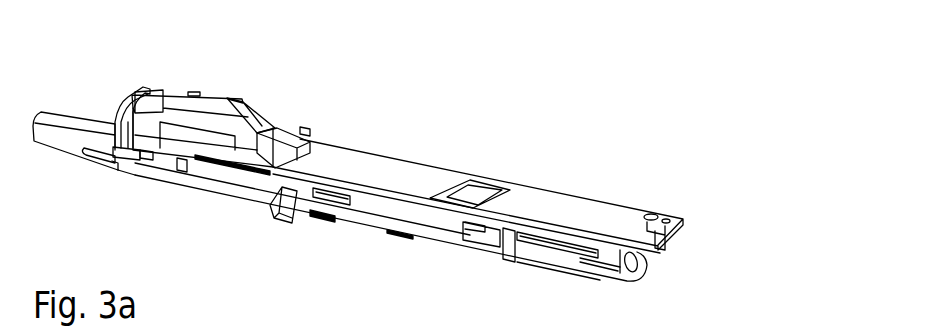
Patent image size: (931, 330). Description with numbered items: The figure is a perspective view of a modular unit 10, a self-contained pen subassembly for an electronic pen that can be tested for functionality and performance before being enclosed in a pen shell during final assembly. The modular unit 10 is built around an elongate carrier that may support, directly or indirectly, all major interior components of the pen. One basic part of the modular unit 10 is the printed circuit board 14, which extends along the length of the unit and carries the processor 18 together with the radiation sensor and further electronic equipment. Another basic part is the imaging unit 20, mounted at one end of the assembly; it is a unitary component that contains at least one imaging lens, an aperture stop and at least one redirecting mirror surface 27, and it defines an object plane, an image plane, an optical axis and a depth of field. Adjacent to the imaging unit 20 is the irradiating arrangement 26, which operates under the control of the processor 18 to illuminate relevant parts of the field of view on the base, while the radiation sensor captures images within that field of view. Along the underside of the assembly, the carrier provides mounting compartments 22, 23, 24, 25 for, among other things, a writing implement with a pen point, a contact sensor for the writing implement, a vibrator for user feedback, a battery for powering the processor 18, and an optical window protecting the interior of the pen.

The modular unit 10 is at (602, 168).
The printed circuit board 14 is at (400, 167).
The processor 18 is at (473, 190).
The imaging unit 20 is at (237, 95).
The mounting compartment 22 is at (181, 185).
The mounting compartment 23 is at (498, 258).
The mounting compartment 24 is at (533, 240).
The mounting compartment 25 is at (104, 106).
The irradiating arrangement 26 is at (201, 72).
The redirecting mirror surface 27 is at (254, 126).